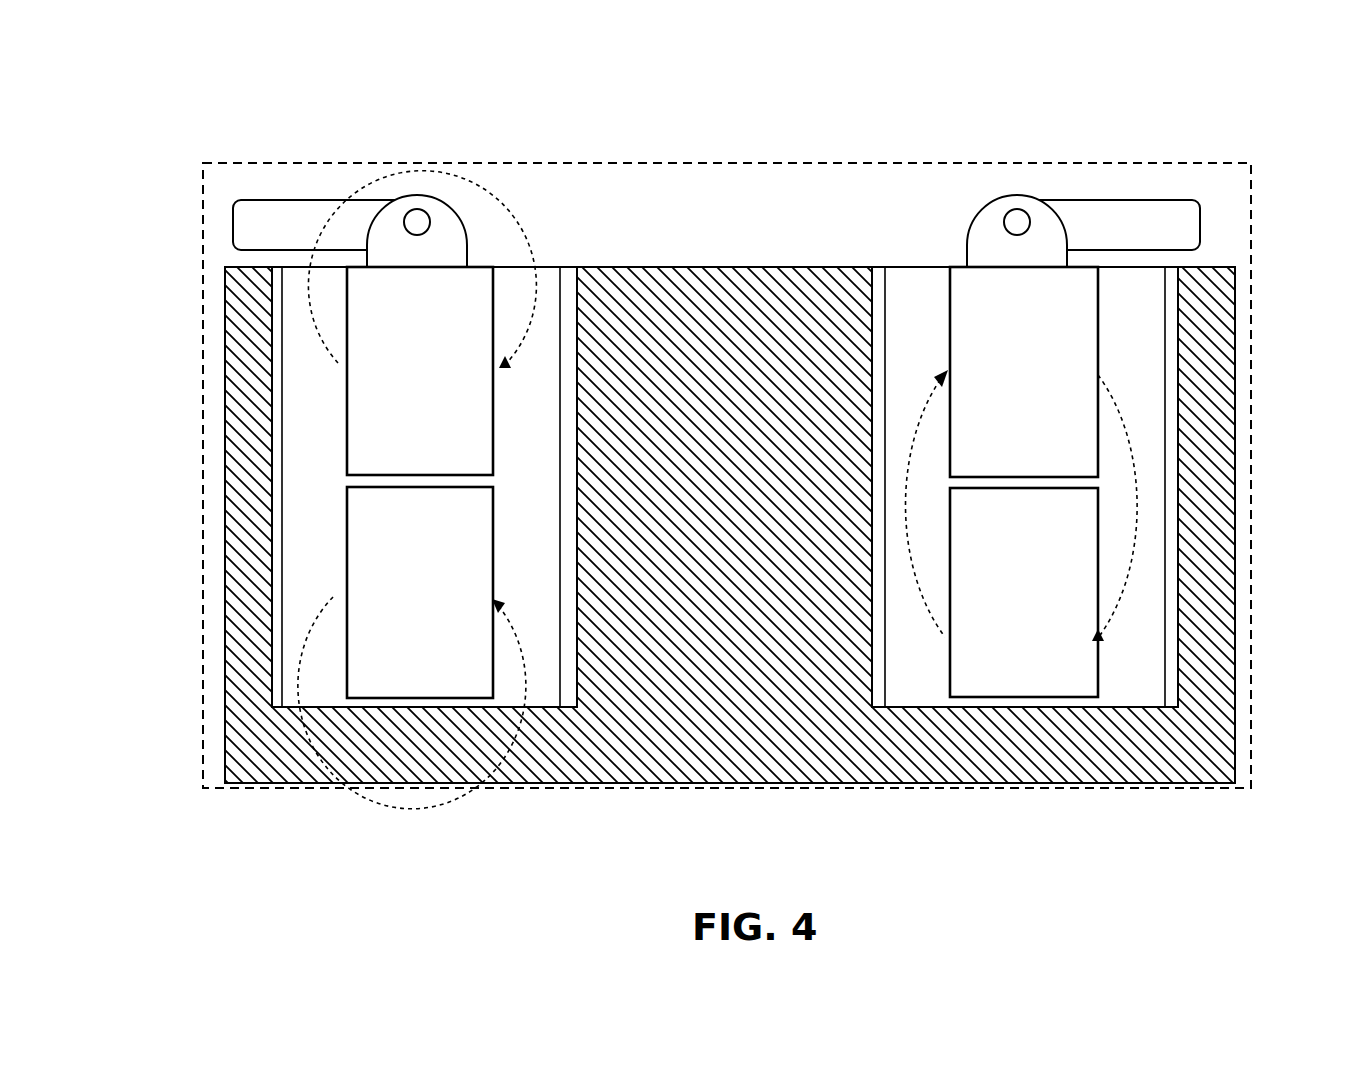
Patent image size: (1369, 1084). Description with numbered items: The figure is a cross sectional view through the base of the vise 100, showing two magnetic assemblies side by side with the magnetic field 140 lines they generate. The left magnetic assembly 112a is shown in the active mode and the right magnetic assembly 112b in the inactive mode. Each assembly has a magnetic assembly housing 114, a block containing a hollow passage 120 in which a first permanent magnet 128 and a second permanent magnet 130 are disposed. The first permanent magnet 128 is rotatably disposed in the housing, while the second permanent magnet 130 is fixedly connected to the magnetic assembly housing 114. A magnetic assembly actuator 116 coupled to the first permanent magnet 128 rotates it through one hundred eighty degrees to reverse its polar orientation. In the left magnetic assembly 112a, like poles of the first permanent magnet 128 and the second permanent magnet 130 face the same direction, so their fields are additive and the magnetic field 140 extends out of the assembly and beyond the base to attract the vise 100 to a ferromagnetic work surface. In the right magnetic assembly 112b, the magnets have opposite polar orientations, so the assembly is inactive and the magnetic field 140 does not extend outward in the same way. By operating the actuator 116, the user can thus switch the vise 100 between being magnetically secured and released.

The vise 100 is at (1143, 147).
The left magnetic assembly 112a is at (625, 260).
The right magnetic assembly 112b is at (848, 250).
The magnetic assembly housing 114 is at (543, 290).
The magnetic assembly actuator 116 is at (270, 222).
The hollow passage 120 is at (408, 705).
The first permanent magnet 128 is at (370, 425).
The second permanent magnet 130 is at (365, 533).
The magnetic field 140 is at (495, 195).